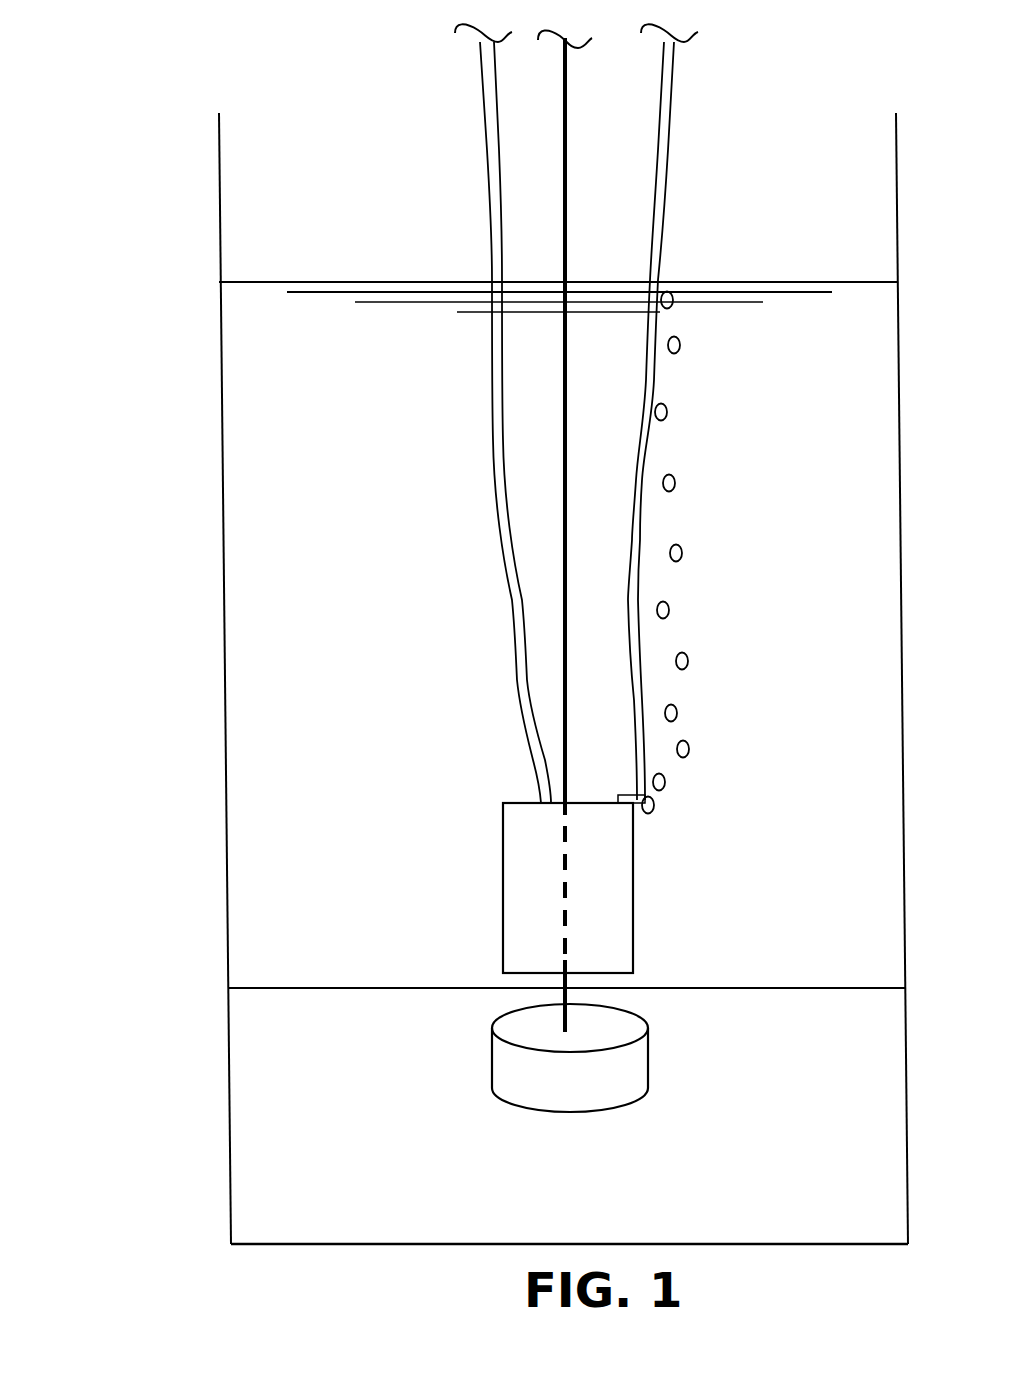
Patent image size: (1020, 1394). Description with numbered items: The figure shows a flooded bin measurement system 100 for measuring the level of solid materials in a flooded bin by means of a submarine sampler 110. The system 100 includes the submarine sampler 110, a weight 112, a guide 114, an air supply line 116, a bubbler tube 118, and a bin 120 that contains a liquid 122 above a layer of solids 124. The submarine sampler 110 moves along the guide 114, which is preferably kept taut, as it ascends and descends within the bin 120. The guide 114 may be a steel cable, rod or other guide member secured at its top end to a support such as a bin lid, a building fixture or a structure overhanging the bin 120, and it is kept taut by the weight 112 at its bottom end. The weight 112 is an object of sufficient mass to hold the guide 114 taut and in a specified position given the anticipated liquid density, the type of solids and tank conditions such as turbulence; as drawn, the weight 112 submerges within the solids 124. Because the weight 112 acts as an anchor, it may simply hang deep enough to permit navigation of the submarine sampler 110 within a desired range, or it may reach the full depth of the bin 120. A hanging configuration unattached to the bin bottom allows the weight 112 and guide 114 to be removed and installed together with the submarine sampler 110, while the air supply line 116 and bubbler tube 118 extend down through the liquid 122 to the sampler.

The system 100 is at (747, 128).
The submarine sampler 110 is at (503, 877).
The weight 112 is at (652, 1077).
The guide 114 is at (563, 502).
The air supply line 116 is at (517, 657).
The bubbler tube 118 is at (636, 537).
The bin 120 is at (222, 716).
The liquid 122 is at (255, 420).
The solids 124 is at (278, 1107).